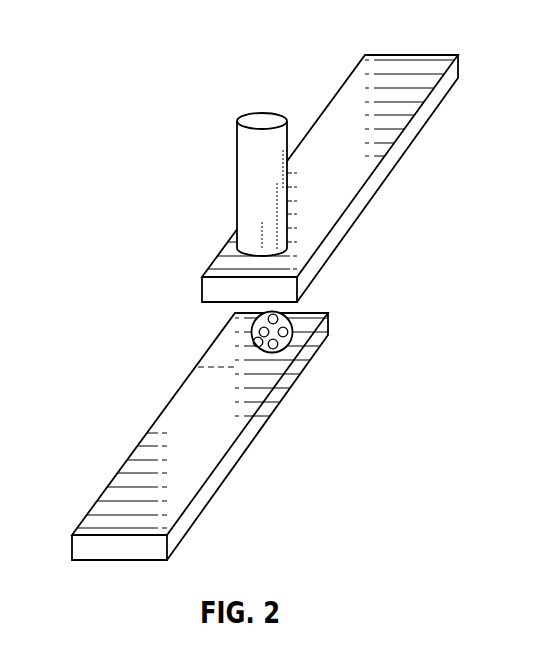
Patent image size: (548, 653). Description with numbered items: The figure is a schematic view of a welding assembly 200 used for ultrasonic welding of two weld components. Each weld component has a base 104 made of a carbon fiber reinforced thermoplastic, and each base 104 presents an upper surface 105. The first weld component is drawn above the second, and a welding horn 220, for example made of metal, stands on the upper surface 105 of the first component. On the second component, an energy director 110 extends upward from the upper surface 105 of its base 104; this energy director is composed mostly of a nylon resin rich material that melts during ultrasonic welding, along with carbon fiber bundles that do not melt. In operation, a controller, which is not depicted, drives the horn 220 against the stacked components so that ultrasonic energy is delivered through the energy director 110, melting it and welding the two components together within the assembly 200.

The welding assembly 200 is at (112, 104).
The base 104 is at (397, 152).
The upper surface 105 is at (425, 68).
The energy director 110 is at (302, 340).
The welding horn 220 is at (237, 170).